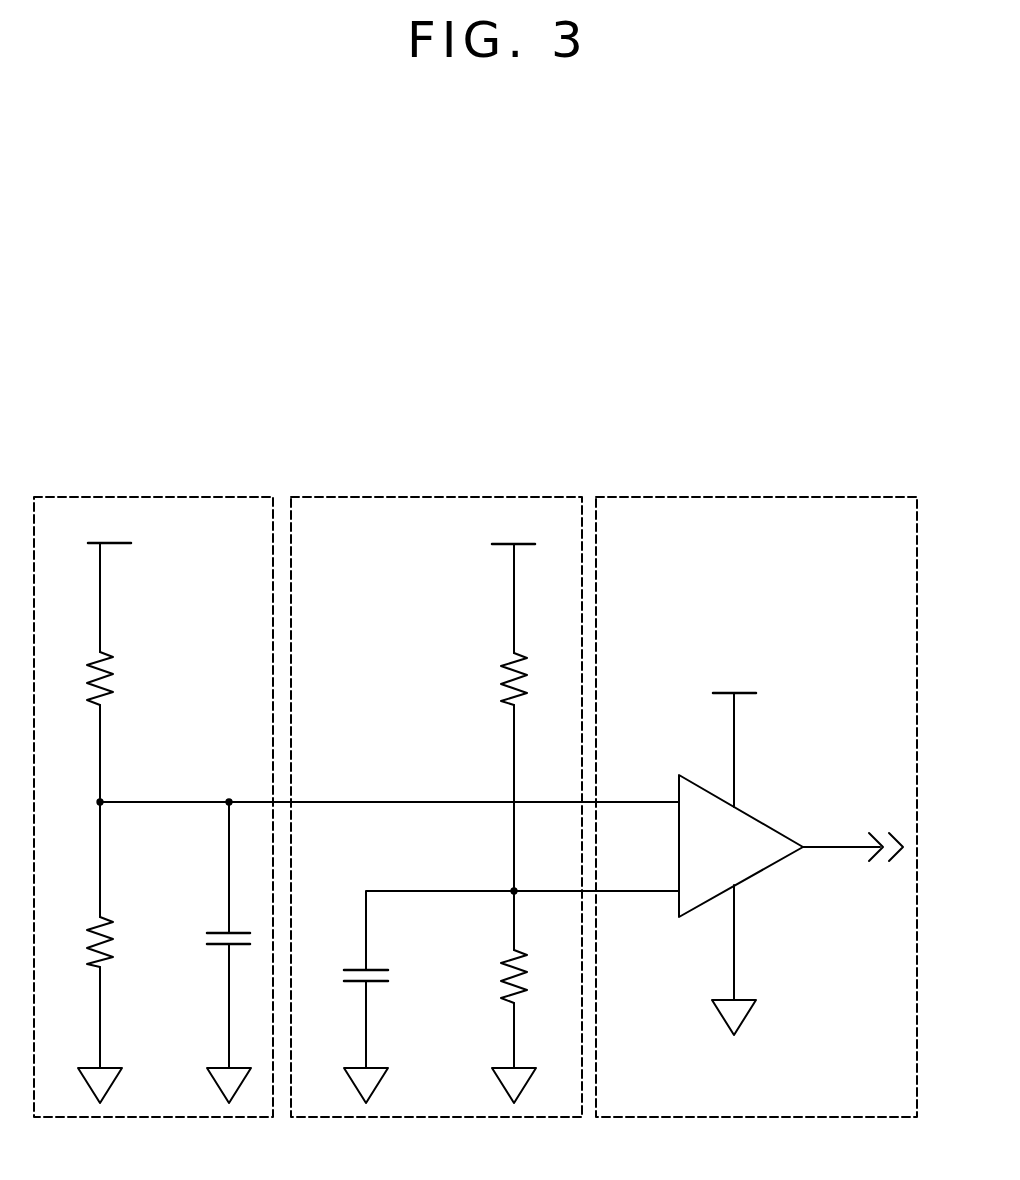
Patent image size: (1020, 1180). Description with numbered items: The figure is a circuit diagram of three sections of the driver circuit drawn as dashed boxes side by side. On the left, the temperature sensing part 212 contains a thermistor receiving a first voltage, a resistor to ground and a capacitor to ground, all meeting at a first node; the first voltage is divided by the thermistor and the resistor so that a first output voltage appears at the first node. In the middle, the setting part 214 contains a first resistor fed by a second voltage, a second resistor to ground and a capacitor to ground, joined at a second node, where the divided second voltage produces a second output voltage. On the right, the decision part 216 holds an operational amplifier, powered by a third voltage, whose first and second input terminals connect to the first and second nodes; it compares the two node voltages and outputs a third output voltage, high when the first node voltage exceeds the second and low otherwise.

The temperature sensing part 212 is at (152, 497).
The setting part 214 is at (437, 497).
The decision part 216 is at (755, 497).